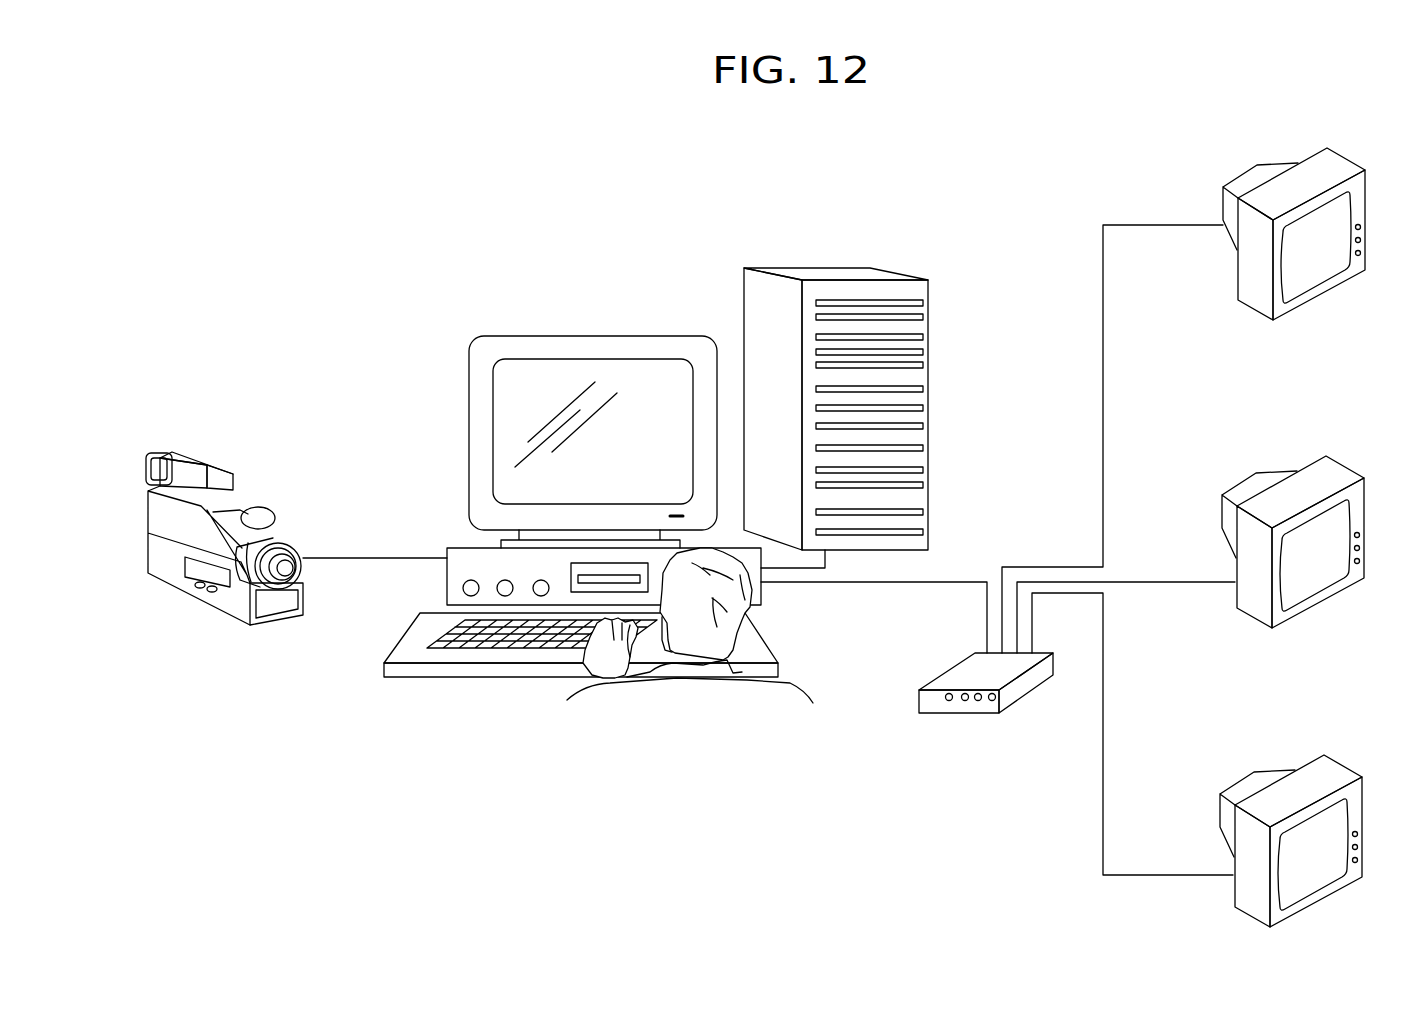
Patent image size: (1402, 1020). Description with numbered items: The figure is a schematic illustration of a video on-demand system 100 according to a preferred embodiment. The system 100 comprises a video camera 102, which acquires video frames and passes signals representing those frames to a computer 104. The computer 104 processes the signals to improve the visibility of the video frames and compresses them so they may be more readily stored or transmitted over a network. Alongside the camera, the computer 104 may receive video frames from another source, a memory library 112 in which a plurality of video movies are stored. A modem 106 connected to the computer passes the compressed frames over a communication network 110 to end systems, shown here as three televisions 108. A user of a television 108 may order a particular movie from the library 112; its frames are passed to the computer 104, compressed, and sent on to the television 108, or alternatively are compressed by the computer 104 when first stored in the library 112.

The video on-demand system 100 is at (343, 168).
The video camera 102 is at (208, 462).
The computer 104 is at (556, 337).
The modem 106 is at (975, 713).
The television 108 is at (1335, 148).
The communication network 110 is at (1103, 497).
The memory library 112 is at (920, 517).